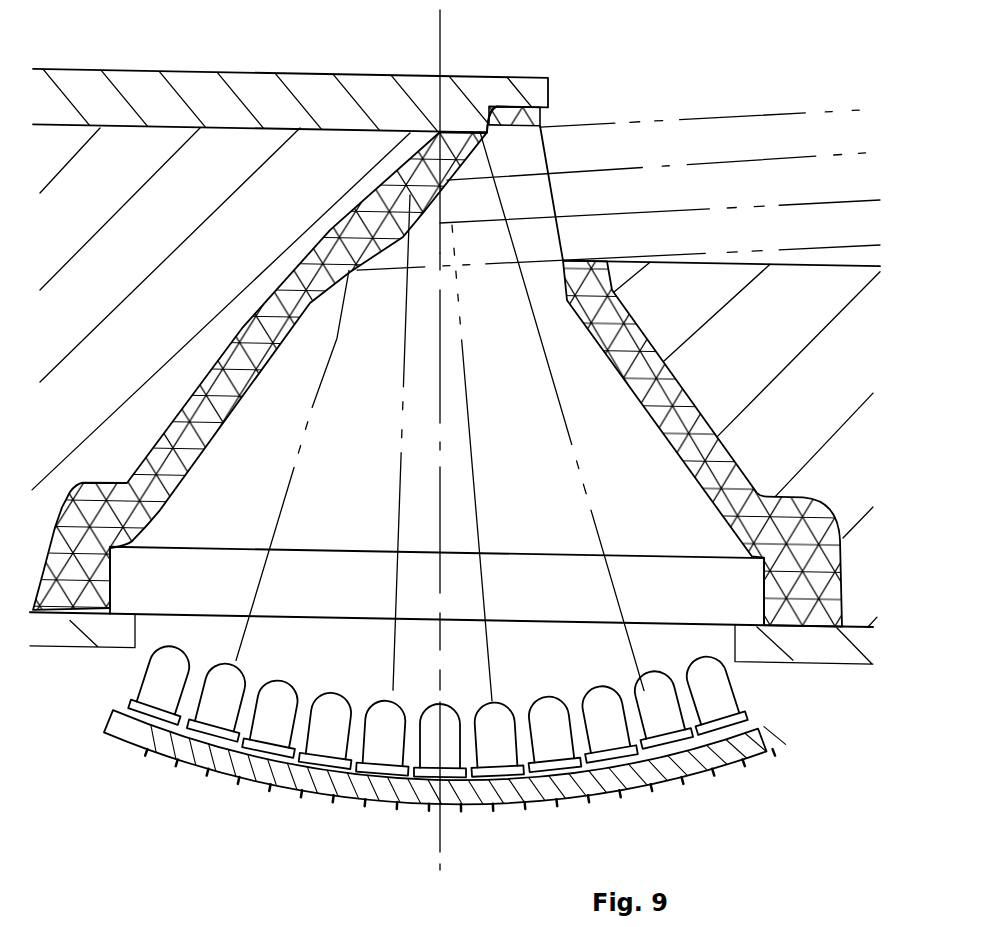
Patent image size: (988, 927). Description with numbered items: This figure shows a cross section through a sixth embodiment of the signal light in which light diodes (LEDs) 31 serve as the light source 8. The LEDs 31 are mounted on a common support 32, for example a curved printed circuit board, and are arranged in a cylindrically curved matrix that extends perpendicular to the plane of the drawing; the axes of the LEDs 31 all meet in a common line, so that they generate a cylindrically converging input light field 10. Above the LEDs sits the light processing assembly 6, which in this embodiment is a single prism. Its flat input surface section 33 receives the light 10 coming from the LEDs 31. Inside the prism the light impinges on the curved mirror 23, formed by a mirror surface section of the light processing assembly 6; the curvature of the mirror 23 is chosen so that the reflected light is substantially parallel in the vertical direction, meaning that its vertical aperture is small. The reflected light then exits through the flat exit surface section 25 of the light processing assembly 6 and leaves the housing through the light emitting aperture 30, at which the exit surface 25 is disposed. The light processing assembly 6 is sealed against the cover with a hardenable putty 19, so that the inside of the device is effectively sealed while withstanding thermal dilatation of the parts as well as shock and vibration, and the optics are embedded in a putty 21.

The light processing assembly 6 is at (664, 523).
The light source 8 is at (710, 112).
The input light field 10 is at (250, 636).
The hardenable putty 19 is at (367, 209).
The putty 21 is at (803, 607).
The curved mirror 23 is at (422, 182).
The exit surface section 25 is at (547, 160).
The light emitting aperture 30 is at (563, 114).
The light diodes 31 is at (157, 692).
The common support 32 is at (697, 752).
The input surface section 33 is at (577, 628).